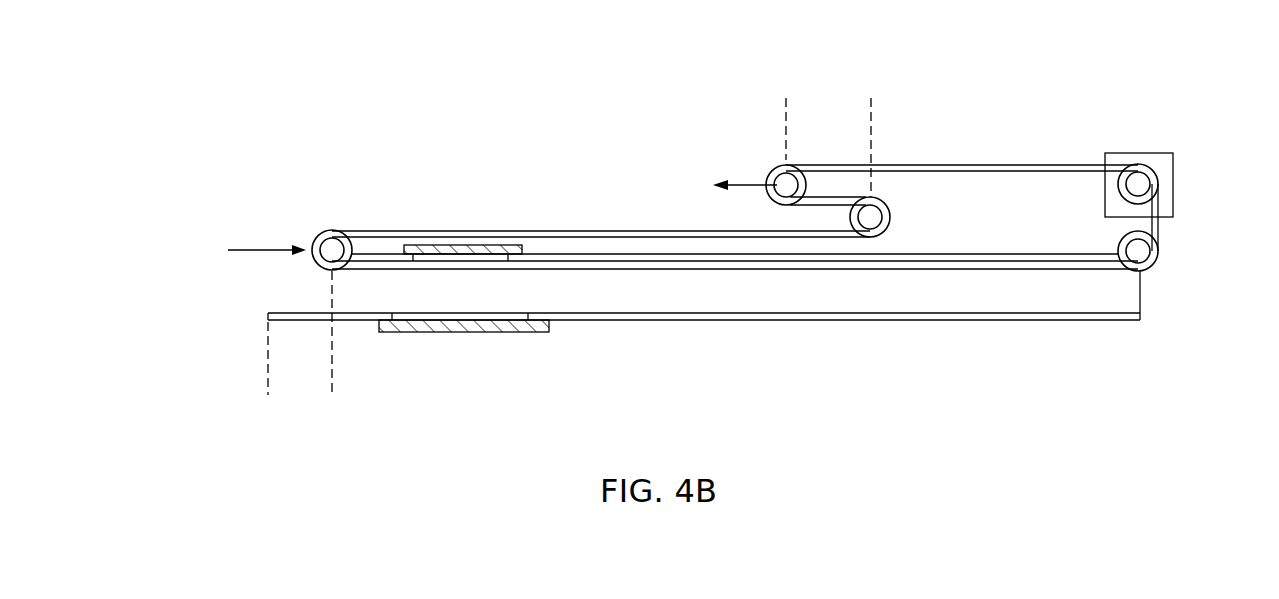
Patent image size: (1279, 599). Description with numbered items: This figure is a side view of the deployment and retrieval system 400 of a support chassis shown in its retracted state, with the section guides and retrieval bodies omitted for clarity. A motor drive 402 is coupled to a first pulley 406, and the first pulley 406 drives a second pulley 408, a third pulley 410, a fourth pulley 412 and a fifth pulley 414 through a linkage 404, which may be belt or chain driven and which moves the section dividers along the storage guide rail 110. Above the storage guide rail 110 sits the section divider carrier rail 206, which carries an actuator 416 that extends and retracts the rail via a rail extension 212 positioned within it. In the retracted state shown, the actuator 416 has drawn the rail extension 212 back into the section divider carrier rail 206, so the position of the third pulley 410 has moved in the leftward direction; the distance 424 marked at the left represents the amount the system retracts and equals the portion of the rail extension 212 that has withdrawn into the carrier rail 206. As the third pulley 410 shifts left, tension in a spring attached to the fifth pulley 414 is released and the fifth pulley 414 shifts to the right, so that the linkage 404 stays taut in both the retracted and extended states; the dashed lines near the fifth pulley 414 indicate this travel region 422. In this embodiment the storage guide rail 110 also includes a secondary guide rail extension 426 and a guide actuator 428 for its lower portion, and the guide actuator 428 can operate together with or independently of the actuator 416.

The deployment and retrieval system 400 is at (170, 113).
The storage guide rail 110 is at (893, 322).
The section divider carrier rail 206 is at (383, 242).
The rail extension 212 is at (494, 257).
The motor drive 402 is at (1148, 153).
The linkage 404 is at (930, 164).
The first pulley 406 is at (1160, 177).
The second pulley 408 is at (1160, 258).
The third pulley 410 is at (320, 233).
The fourth pulley 412 is at (886, 206).
The fifth pulley 414 is at (775, 168).
The actuator 416 is at (437, 245).
The output region 422 is at (828, 95).
The distance 424 is at (295, 403).
The secondary guide rail extension 426 is at (491, 313).
The guide actuator 428 is at (463, 333).